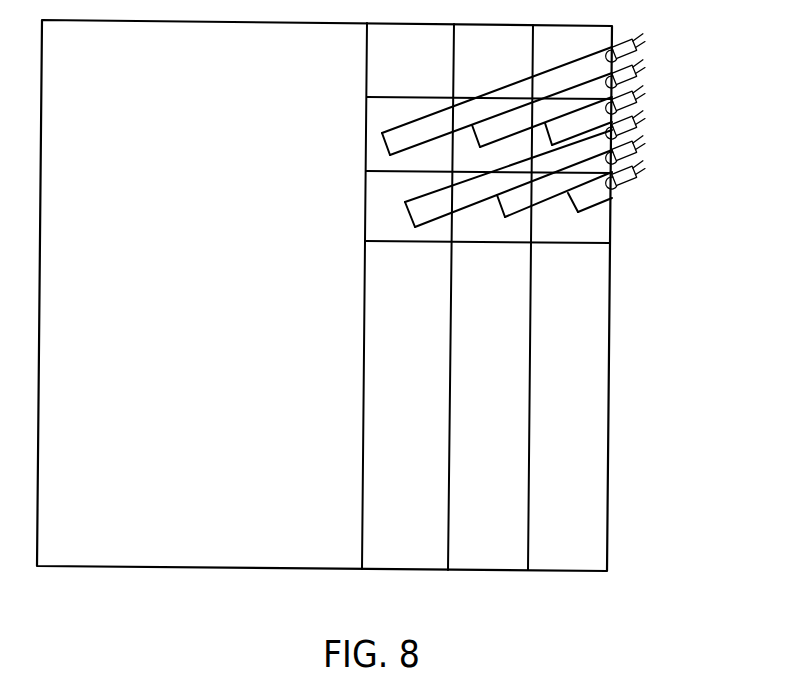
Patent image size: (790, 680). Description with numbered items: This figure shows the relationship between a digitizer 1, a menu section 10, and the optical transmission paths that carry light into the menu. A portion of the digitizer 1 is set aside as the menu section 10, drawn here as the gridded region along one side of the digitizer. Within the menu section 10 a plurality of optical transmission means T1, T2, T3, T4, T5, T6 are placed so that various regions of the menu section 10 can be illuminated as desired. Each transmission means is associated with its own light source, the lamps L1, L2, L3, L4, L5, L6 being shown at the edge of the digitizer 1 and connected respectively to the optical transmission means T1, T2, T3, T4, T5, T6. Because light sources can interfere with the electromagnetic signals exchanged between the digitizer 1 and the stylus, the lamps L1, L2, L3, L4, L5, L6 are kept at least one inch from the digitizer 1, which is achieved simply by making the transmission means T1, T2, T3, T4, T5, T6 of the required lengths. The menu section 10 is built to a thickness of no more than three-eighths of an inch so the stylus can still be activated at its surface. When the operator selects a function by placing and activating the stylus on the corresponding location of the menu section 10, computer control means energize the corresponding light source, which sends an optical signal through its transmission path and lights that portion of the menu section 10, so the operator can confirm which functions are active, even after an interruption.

The digitizer 1 is at (607, 493).
The menu section 10 is at (150, 568).
The optical transmission means T1 is at (383, 143).
The optical transmission means T2 is at (476, 137).
The optical transmission means T3 is at (548, 134).
The optical transmission means T4 is at (409, 214).
The optical transmission means T5 is at (501, 206).
The optical transmission means T6 is at (573, 203).
The light source L1 is at (641, 45).
The light source L2 is at (641, 71).
The light source L3 is at (641, 97).
The light source L4 is at (641, 122).
The light source L5 is at (641, 147).
The light source L6 is at (641, 172).